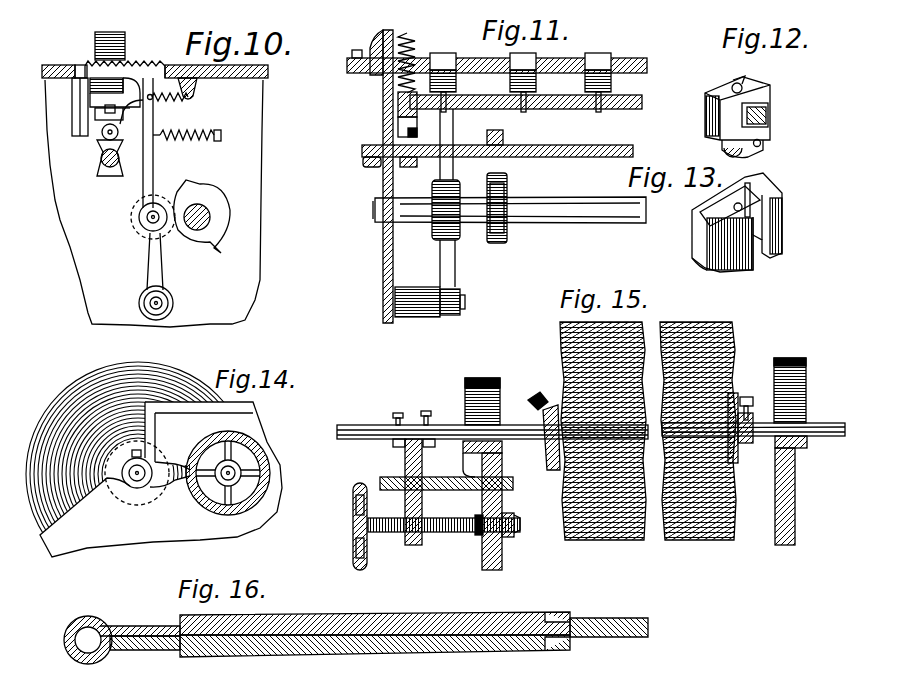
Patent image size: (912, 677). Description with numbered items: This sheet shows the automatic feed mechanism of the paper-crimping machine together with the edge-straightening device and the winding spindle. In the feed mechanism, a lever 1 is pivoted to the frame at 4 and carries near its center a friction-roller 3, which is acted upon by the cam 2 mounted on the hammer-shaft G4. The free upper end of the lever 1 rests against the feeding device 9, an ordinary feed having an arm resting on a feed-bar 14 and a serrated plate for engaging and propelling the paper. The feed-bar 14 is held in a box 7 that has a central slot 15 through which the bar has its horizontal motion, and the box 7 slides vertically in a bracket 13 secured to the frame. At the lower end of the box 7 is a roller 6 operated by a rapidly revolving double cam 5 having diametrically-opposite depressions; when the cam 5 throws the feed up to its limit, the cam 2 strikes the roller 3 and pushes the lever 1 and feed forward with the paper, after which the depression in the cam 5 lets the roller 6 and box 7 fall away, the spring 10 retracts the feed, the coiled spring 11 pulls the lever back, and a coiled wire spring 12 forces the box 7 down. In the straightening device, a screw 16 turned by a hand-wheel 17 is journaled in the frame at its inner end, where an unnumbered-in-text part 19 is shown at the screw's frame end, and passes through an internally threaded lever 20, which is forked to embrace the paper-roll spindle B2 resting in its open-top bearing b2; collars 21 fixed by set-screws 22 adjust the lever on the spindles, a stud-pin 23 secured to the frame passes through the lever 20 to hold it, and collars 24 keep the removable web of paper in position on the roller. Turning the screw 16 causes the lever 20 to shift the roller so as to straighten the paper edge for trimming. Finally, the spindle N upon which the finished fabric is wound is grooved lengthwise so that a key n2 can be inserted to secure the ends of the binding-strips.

In FIG. 10, the lever 1 is at (153, 180).
In FIG. 11, the lever 1 is at (432, 236).
In FIG. 10, the cam 2 is at (188, 190).
In FIG. 10, the friction-roller 3 is at (150, 230).
In FIG. 10, the pivot 4 is at (169, 302).
In FIG. 11, the pivot 4 is at (422, 317).
In FIG. 10, the double cam 5 is at (112, 167).
In FIG. 10, the roller 6 is at (104, 142).
In FIG. 11, the roller 6 is at (385, 132).
In FIG. 12, the roller 6 is at (752, 154).
In FIG. 10, the box 7 is at (95, 114).
In FIG. 12, the box 7 is at (768, 113).
In FIG. 10, the feeding device 9 is at (90, 64).
In FIG. 11, the feeding device 9 is at (510, 82).
In FIG. 10, the spring 10 is at (180, 102).
In FIG. 10, the coiled spring 11 is at (190, 140).
In FIG. 10, the coiled wire spring 12 is at (125, 48).
In FIG. 11, the coiled wire spring 12 is at (413, 50).
In FIG. 10, the bracket 13 is at (90, 108).
In FIG. 13, the bracket 13 is at (782, 212).
In FIG. 10, the feed-bar 14 is at (108, 120).
In FIG. 11, the feed-bar 14 is at (473, 118).
In FIG. 11, the slot 15 is at (400, 104).
In FIG. 12, the slot 15 is at (763, 103).
In FIG. 14, the slot 15 is at (108, 472).
In FIG. 15, the screw 16 is at (462, 530).
In FIG. 15, the hand-wheel 17 is at (350, 526).
In FIG. 15, the bearing 19 is at (512, 510).
In FIG. 15, the lever 20 is at (418, 507).
In FIG. 15, the collars 21 is at (396, 418).
In FIG. 15, the set-screws 22 is at (428, 410).
In FIG. 15, the stud-pin 23 is at (458, 470).
In FIG. 15, the collars 24 is at (549, 455).
In FIG. 14, the spindle B2 is at (137, 478).
In FIG. 15, the spindle B2 is at (360, 440).
In FIG. 14, the bearing b2 is at (128, 446).
In FIG. 15, the bearing b2 is at (497, 432).
In FIG. 10, the hammer-shaft G4 is at (205, 212).
In FIG. 16, the spindle N is at (356, 632).
In FIG. 16, the key n2 is at (418, 622).